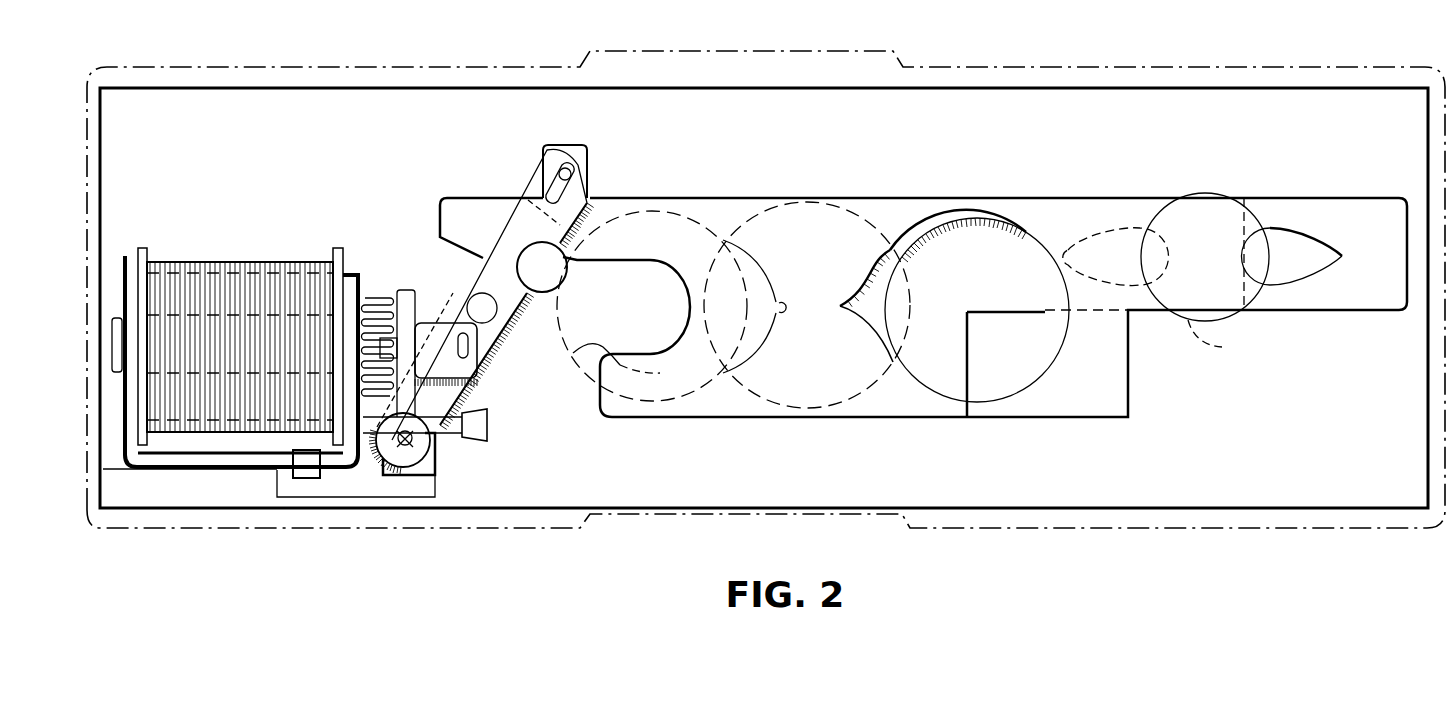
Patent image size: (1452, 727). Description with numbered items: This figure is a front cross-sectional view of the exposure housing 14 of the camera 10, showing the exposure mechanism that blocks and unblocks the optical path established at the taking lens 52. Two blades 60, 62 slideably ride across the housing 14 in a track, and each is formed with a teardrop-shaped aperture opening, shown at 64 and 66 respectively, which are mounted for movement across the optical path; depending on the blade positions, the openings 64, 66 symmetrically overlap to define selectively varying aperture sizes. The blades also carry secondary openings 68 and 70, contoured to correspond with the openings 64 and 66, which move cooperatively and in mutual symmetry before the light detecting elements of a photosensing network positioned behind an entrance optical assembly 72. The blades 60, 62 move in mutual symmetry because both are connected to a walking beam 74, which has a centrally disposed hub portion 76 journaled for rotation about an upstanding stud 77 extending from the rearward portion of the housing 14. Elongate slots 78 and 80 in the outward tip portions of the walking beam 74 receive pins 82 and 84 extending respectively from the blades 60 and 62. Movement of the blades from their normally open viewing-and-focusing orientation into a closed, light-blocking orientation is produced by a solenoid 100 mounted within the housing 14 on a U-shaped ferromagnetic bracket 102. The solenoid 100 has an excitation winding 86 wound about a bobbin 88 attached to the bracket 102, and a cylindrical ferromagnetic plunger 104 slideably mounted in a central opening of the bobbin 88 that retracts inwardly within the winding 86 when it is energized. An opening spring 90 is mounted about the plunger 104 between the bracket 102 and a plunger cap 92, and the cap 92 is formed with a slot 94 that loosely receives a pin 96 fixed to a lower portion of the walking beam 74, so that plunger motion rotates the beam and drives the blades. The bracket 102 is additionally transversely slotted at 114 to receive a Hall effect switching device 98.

The camera 10 is at (1257, 483).
The exposure housing 14 is at (900, 62).
The taking lens 52 is at (820, 407).
The blade 60 is at (975, 199).
The blade 62 is at (450, 203).
The aperture opening 64 is at (911, 390).
The aperture opening 66 is at (652, 306).
The secondary opening 68 is at (1288, 237).
The secondary opening 70 is at (1112, 237).
The entrance optical assembly 72 is at (1205, 272).
The walking beam 74 is at (535, 198).
The hub portion 76 is at (501, 277).
The upstanding stud 77 is at (480, 292).
The elongate slot 78 is at (567, 190).
The elongate slot 80 is at (395, 462).
The pin 82 is at (568, 166).
The pin 84 is at (435, 467).
The excitation winding 86 is at (260, 258).
The bobbin 88 is at (200, 262).
The opening spring 90 is at (386, 292).
The plunger cap 92 is at (402, 289).
The slot 94 is at (470, 348).
The pin 96 is at (453, 323).
The Hall effect switching device 98 is at (290, 465).
The solenoid 100 is at (235, 307).
The U-shaped ferromagnetic bracket 102 is at (122, 435).
The plunger 104 is at (240, 330).
The transverse slot 114 is at (333, 472).